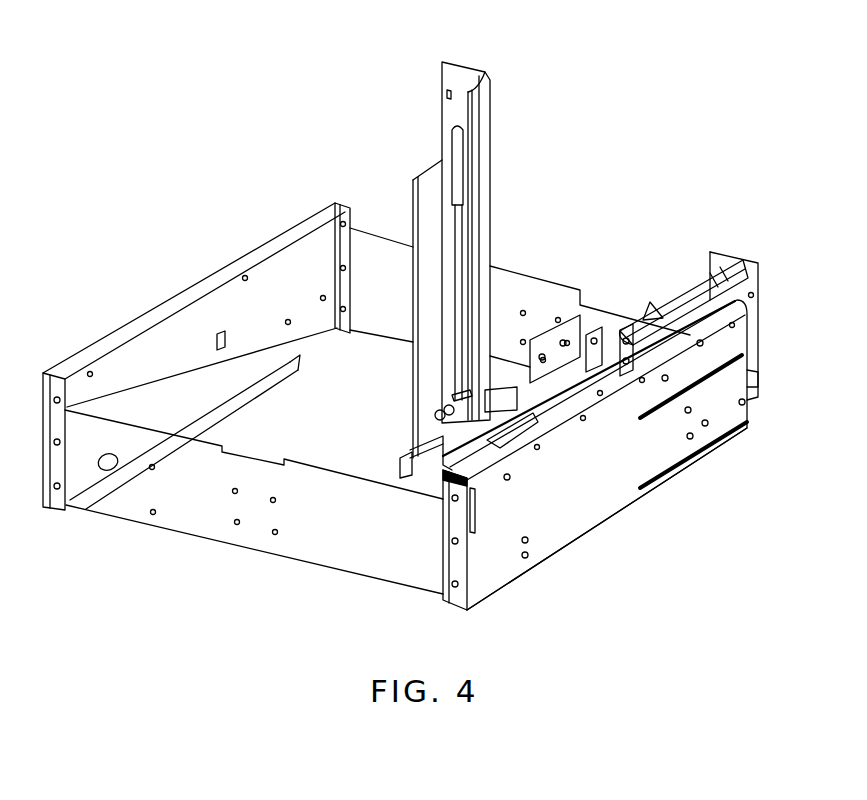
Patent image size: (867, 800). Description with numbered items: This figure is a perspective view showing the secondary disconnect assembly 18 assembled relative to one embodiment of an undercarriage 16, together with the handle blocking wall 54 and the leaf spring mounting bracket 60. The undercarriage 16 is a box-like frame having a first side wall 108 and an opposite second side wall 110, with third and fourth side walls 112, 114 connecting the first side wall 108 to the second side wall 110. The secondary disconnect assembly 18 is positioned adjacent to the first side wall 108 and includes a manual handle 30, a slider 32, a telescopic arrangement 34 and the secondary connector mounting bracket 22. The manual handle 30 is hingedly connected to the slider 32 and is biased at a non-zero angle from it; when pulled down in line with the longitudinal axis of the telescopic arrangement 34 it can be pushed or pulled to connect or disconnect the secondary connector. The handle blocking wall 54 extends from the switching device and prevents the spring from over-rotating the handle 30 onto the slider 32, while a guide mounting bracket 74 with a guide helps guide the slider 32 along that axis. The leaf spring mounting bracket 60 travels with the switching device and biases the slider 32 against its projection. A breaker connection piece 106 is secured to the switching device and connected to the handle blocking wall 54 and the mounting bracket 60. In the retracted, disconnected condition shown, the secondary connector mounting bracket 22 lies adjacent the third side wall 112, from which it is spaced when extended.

The undercarriage 16 is at (617, 478).
The secondary disconnect assembly 18 is at (641, 300).
The secondary connector mounting bracket 22 is at (752, 284).
The manual handle 30 is at (477, 247).
The slider 32 is at (537, 405).
The telescopic arrangement 34 is at (690, 282).
The handle blocking wall 54 is at (462, 78).
The leaf spring mounting bracket 60 is at (513, 452).
The guide mounting bracket 74 is at (585, 333).
The breaker connection piece 106 is at (432, 377).
The first side wall 108 is at (592, 503).
The second side wall 110 is at (134, 365).
The third side wall 112 is at (547, 293).
The fourth side wall 114 is at (317, 530).